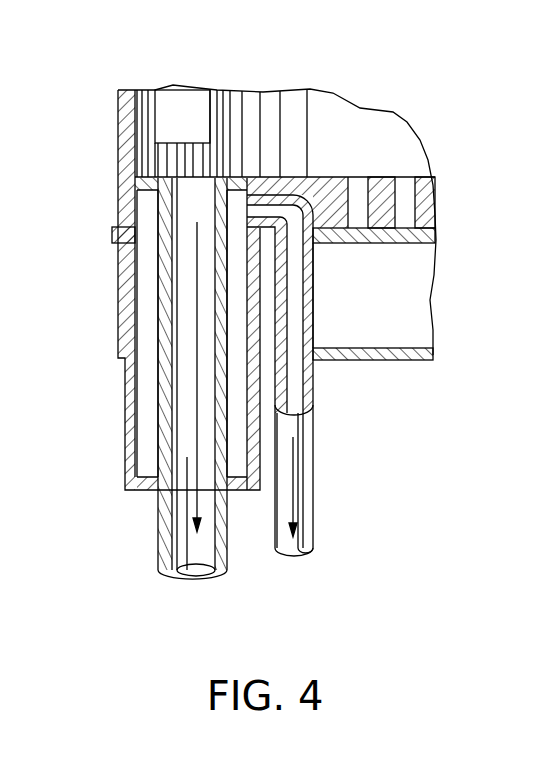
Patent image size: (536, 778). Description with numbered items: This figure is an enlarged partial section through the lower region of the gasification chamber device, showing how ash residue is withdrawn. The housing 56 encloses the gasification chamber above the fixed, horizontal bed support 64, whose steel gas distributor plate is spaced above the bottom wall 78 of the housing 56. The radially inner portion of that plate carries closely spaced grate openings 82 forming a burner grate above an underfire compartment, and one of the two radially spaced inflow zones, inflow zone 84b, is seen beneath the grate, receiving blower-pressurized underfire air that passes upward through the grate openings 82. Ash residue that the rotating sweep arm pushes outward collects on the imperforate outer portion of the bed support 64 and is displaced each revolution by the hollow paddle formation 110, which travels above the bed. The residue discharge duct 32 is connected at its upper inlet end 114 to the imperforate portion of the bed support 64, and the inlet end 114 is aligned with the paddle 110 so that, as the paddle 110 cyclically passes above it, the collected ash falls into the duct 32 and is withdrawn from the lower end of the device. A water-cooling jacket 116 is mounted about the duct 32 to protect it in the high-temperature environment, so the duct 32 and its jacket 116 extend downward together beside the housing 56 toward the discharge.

The housing 56 is at (118, 146).
The hollow paddle formation 110 is at (182, 105).
The upper inlet end of residue discharge duct 114 is at (198, 208).
The water-cooling jacket 116 is at (125, 405).
The residue discharge duct 32 is at (158, 530).
The bed support 64 is at (380, 158).
The grate openings 82 is at (405, 203).
The inflow zone 84b is at (397, 303).
The bottom wall 78 is at (388, 362).